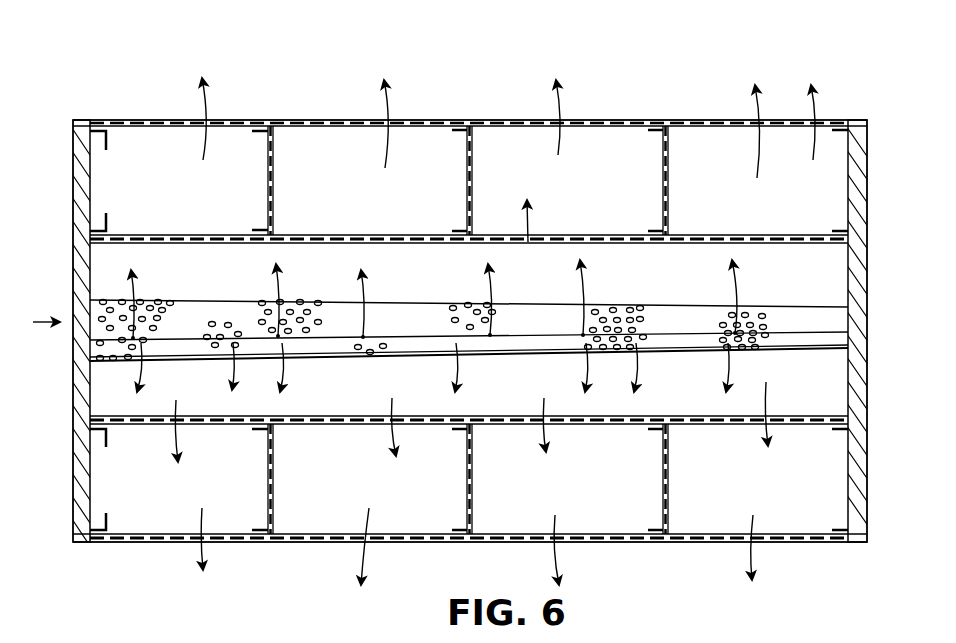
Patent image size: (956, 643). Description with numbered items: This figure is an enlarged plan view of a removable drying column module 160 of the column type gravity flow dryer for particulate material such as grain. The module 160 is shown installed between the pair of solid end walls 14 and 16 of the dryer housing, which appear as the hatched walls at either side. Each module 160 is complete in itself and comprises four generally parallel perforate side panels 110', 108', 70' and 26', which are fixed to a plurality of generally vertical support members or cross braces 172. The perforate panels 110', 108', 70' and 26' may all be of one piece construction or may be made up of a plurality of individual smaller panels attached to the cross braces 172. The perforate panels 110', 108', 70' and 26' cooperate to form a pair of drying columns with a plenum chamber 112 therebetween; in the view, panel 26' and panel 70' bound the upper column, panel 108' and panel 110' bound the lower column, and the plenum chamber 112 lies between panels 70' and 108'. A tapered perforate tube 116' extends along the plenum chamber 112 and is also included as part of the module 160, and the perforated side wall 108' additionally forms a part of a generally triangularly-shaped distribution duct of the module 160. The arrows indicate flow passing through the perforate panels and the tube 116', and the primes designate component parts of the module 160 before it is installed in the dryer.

The end wall 14 is at (73, 165).
The end wall 16 is at (867, 165).
The perforate side panel 26' is at (470, 101).
The removable module 160 is at (606, 112).
The cross braces 172 is at (662, 196).
The perforate side panel 70' is at (469, 221).
The plenum chamber 112 is at (440, 276).
The tapered perforate tube 116' is at (469, 286).
The perforate side panel 108' is at (469, 401).
The perforate side panel 110' is at (470, 515).